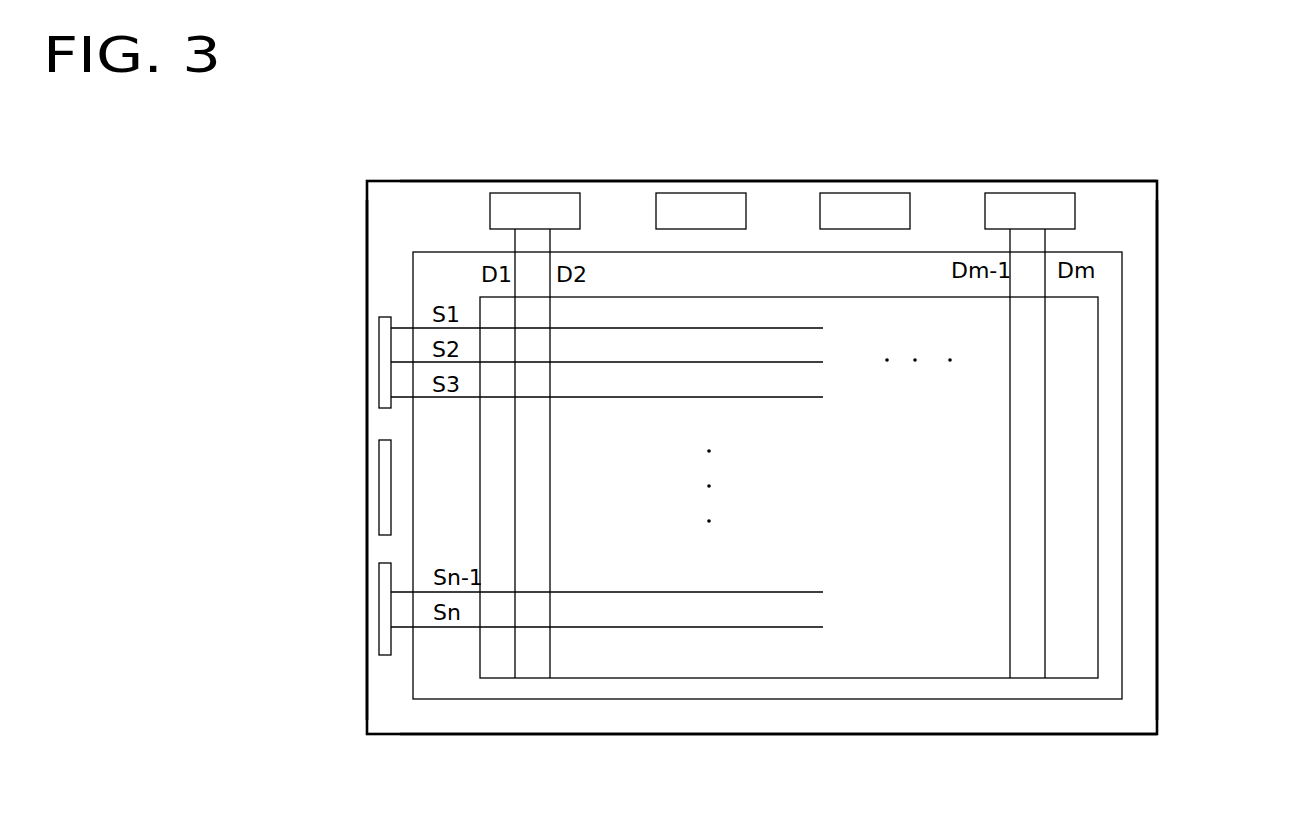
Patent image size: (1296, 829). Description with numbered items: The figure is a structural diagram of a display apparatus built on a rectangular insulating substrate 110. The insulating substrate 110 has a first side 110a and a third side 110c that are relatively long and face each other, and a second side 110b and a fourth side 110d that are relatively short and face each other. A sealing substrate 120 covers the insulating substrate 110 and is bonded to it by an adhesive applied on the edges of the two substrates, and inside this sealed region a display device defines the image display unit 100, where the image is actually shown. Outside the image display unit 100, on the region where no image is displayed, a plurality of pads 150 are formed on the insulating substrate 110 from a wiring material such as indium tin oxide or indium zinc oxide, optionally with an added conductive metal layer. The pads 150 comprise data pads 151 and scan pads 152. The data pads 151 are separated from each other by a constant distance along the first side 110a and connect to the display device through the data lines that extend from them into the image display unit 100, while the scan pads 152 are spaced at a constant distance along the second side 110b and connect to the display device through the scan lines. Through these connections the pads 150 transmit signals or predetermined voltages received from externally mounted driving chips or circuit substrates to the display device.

The image display unit 100 is at (1098, 632).
The insulating substrate 110 is at (1162, 483).
The first side 110a is at (1140, 181).
The second side 110b is at (367, 340).
The third side 110c is at (1138, 734).
The fourth side 110d is at (1157, 330).
The sealing substrate 120 is at (1122, 531).
The pads 150 is at (723, 351).
The data pads 151 is at (557, 193).
The scan pads 152 is at (386, 317).